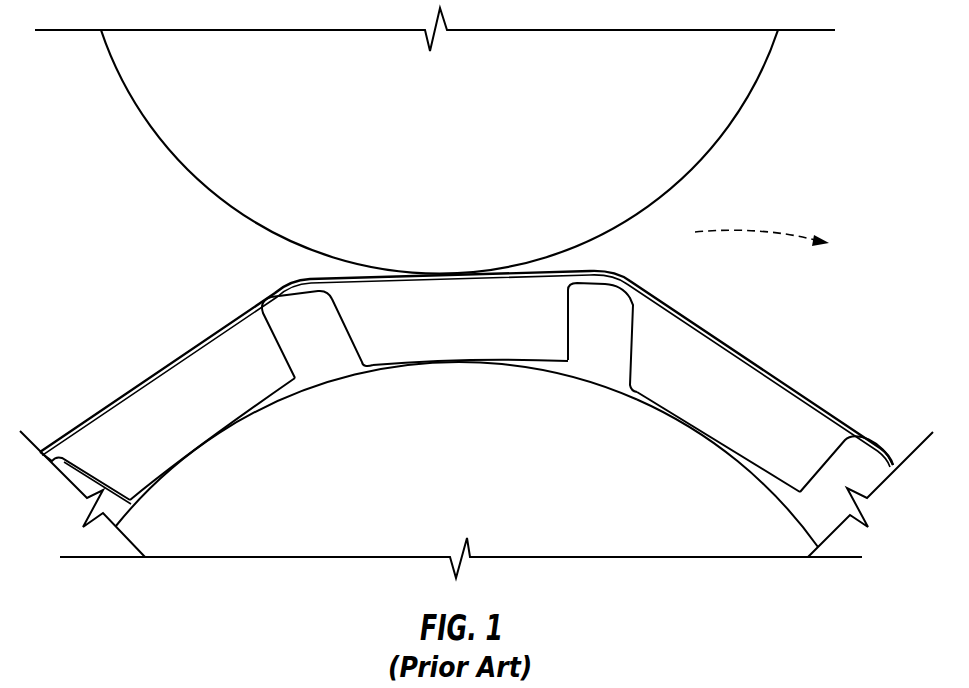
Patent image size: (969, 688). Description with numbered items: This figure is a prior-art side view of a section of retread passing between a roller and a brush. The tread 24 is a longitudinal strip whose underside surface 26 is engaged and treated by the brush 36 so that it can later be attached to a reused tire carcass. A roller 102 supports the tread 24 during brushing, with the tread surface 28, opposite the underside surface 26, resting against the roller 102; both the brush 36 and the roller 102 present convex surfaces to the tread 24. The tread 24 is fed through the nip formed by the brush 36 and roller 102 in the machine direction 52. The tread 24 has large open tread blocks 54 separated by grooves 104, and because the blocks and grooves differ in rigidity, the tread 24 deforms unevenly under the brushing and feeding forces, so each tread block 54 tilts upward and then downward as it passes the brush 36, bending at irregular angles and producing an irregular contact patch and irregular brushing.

The brush 36 is at (454, 141).
The roller 102 is at (488, 494).
The tread 24 is at (466, 391).
The underside surface 26 is at (684, 313).
The tread surface 28 is at (711, 450).
The machine direction 52 is at (757, 231).
The tread blocks 54 is at (190, 433).
The grooves 104 is at (332, 351).